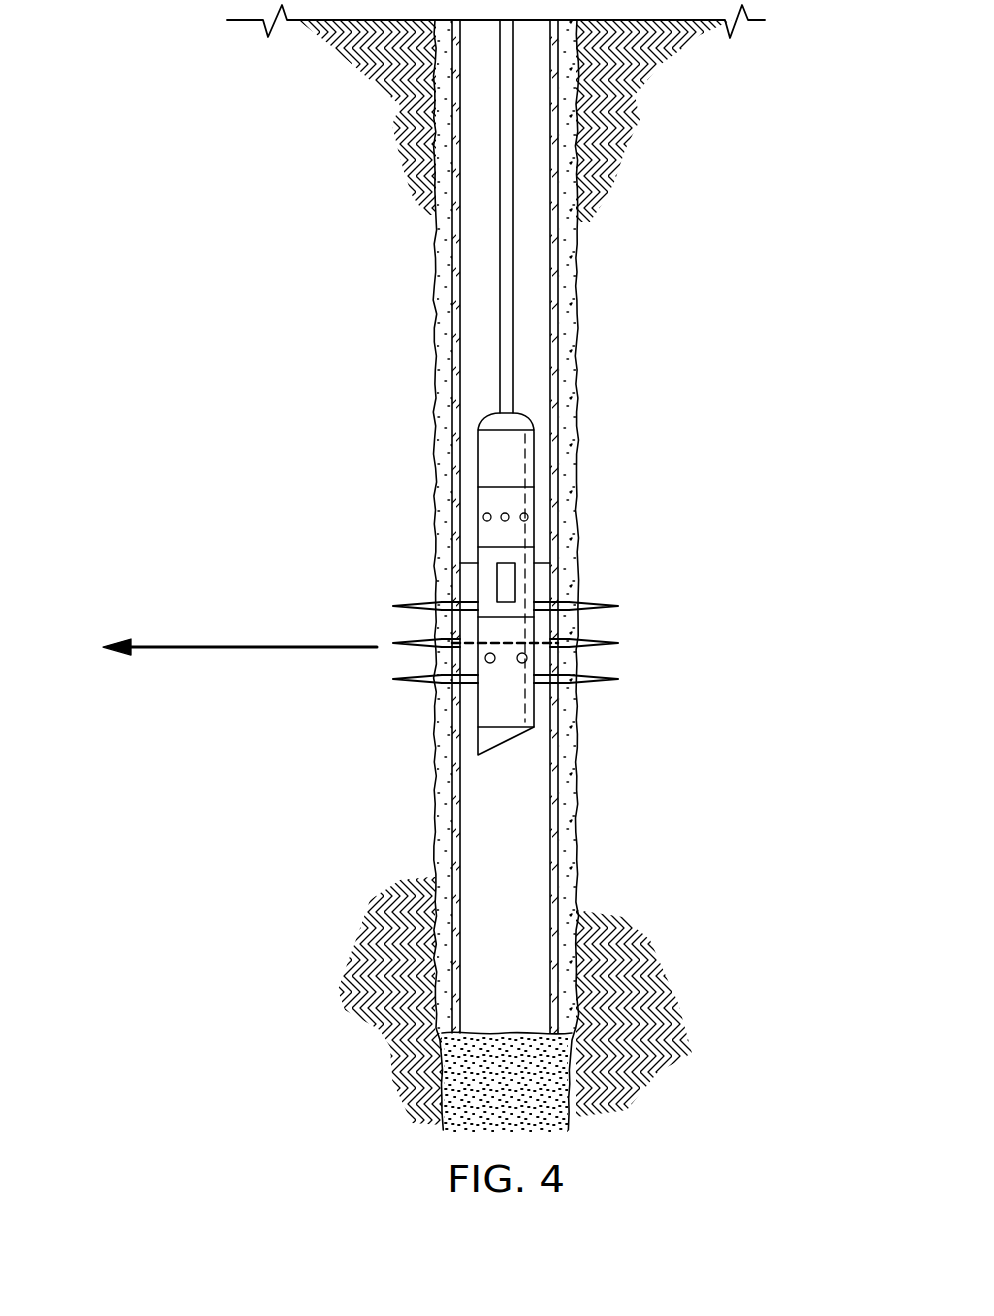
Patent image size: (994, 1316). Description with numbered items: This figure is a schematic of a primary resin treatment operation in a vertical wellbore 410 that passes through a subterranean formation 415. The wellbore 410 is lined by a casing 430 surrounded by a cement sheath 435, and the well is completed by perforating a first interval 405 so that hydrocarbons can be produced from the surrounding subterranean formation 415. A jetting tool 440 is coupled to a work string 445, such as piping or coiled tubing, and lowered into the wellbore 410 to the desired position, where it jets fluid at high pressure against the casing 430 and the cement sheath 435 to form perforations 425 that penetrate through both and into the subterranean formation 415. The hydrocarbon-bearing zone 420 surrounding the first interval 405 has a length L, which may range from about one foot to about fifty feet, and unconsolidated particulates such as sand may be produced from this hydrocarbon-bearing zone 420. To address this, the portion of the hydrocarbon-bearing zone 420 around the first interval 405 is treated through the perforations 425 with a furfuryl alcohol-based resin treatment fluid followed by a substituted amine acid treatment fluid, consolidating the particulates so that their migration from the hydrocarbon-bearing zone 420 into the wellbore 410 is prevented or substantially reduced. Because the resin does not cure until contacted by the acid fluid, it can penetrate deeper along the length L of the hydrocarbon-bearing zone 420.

The first interval 405 is at (627, 597).
The wellbore 410 is at (437, 230).
The subterranean formation 415 is at (268, 368).
The hydrocarbon-bearing zone 420 is at (375, 626).
The perforations 425 is at (408, 684).
The casing 430 is at (556, 340).
The cement sheath 435 is at (572, 282).
The jetting tool 440 is at (478, 463).
The work string 445 is at (500, 310).